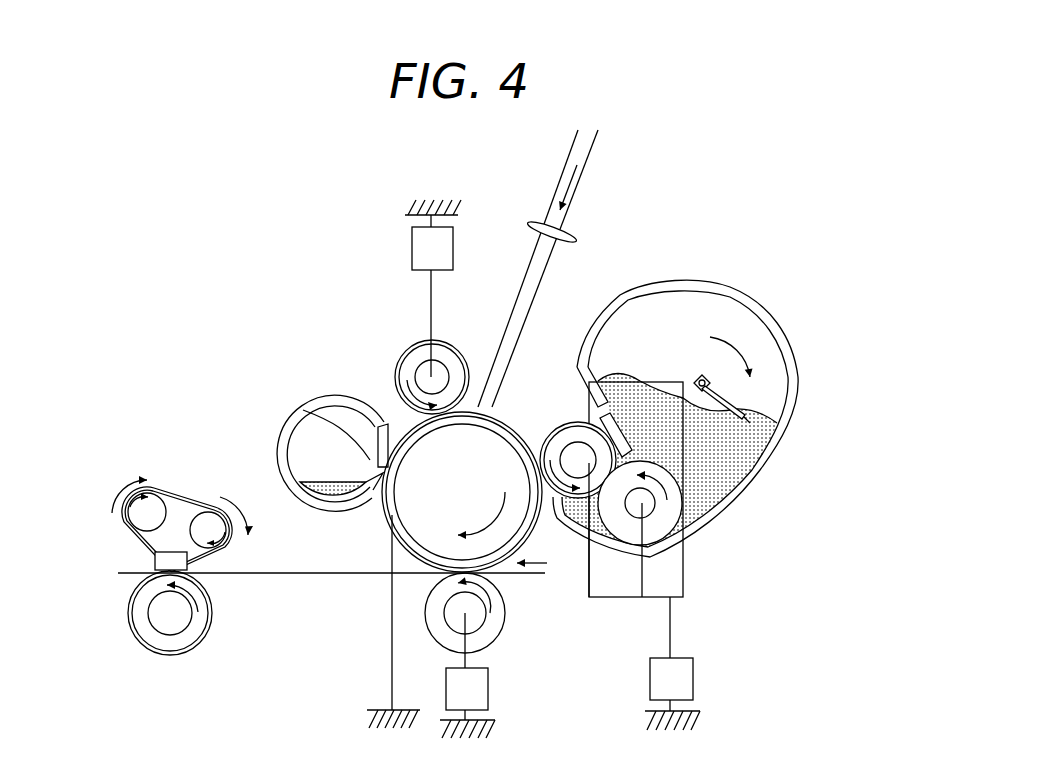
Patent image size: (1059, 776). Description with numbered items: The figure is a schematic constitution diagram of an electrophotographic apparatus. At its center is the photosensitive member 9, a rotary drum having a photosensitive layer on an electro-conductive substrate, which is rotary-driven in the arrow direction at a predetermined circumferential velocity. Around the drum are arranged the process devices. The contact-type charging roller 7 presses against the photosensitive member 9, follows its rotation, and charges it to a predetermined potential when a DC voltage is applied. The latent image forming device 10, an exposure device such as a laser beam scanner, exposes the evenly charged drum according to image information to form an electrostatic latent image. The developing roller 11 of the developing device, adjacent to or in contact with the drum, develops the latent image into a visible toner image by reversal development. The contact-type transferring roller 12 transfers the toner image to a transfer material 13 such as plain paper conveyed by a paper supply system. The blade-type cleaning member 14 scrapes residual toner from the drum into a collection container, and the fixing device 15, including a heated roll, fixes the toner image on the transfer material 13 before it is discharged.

The charging roller 7 is at (410, 362).
The photosensitive member 9 is at (490, 560).
The latent image forming device 10 is at (537, 211).
The developing roller 11 is at (578, 497).
The transferring roller 12 is at (485, 635).
The transfer material 13 is at (303, 573).
The cleaning member 14 is at (327, 428).
The fixing device 15 is at (183, 497).